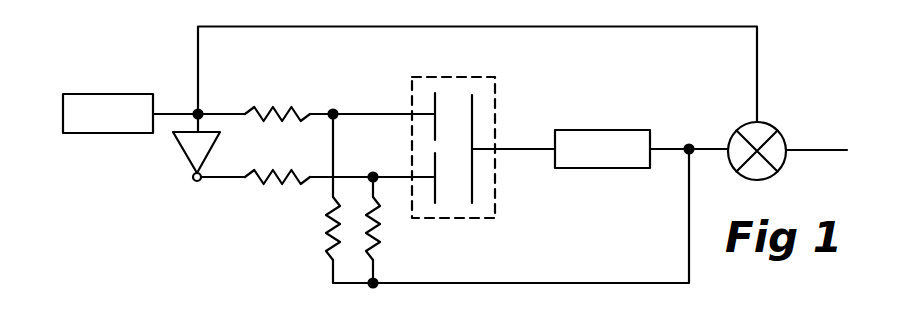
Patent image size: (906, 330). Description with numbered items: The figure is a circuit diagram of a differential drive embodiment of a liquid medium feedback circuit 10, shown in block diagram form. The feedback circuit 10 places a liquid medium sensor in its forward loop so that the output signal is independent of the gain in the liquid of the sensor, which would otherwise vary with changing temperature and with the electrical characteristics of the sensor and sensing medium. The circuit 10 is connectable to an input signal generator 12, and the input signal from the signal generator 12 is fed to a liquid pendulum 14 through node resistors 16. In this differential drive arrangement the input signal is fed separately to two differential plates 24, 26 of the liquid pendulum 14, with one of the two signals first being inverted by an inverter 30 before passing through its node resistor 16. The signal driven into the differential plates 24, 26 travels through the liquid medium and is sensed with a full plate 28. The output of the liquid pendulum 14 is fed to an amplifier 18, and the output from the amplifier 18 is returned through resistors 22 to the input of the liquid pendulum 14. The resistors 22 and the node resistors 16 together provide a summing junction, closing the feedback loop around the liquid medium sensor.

The liquid medium feedback circuit 10 is at (152, 72).
The input signal generator 12 is at (80, 134).
The liquid pendulum 14 is at (485, 72).
The node resistors 16 is at (268, 122).
The amplifier 18 is at (605, 169).
The resistors 22 is at (371, 256).
The differential plate 24 is at (435, 96).
The differential plate 26 is at (437, 200).
The full plate 28 is at (475, 191).
The inverter 30 is at (185, 159).